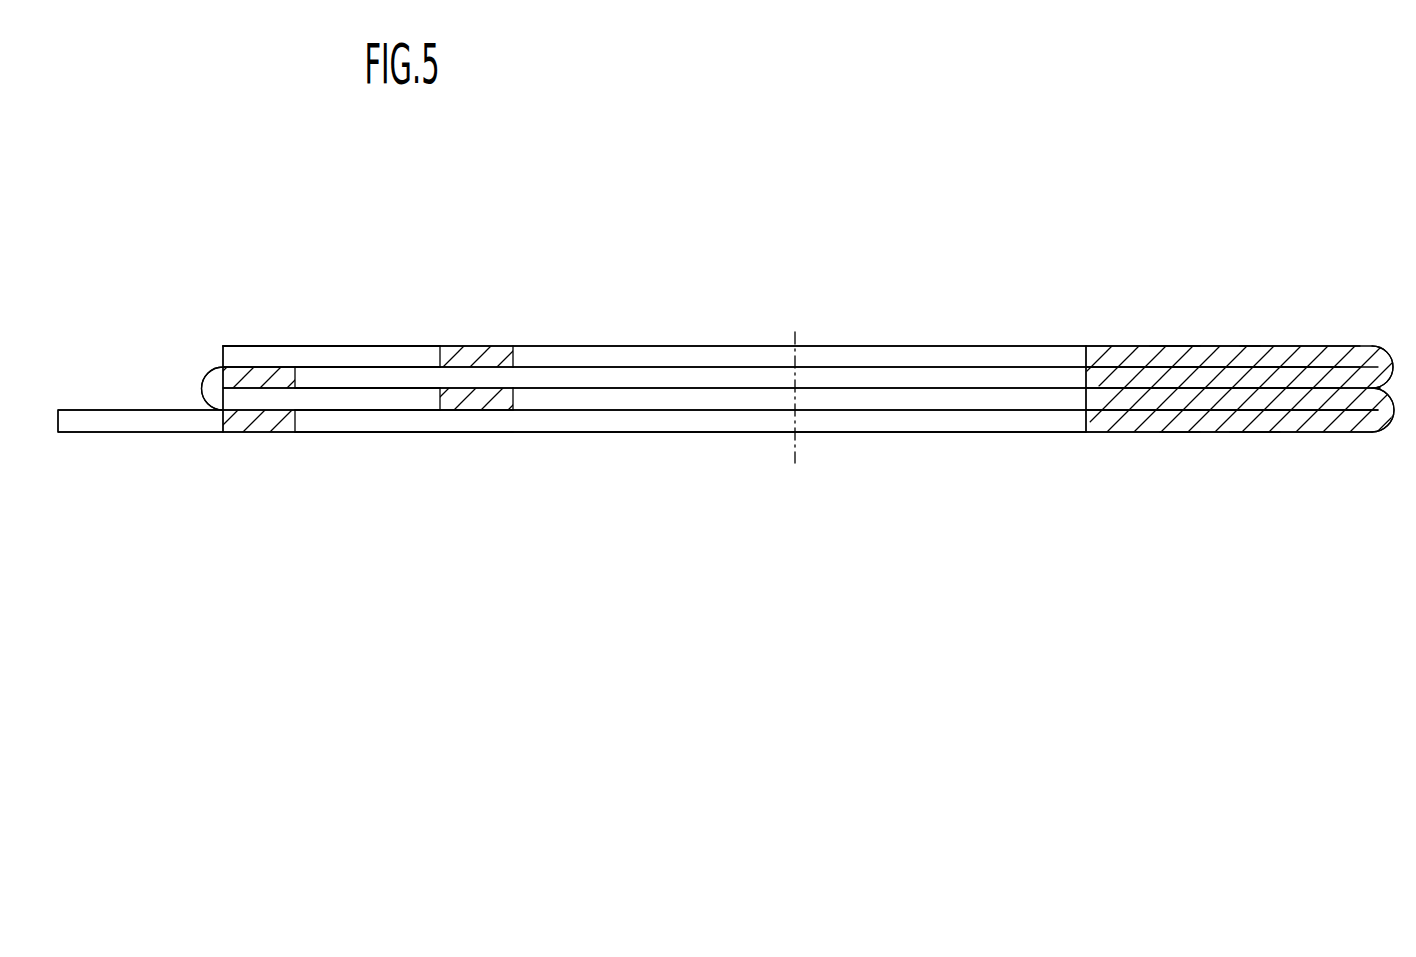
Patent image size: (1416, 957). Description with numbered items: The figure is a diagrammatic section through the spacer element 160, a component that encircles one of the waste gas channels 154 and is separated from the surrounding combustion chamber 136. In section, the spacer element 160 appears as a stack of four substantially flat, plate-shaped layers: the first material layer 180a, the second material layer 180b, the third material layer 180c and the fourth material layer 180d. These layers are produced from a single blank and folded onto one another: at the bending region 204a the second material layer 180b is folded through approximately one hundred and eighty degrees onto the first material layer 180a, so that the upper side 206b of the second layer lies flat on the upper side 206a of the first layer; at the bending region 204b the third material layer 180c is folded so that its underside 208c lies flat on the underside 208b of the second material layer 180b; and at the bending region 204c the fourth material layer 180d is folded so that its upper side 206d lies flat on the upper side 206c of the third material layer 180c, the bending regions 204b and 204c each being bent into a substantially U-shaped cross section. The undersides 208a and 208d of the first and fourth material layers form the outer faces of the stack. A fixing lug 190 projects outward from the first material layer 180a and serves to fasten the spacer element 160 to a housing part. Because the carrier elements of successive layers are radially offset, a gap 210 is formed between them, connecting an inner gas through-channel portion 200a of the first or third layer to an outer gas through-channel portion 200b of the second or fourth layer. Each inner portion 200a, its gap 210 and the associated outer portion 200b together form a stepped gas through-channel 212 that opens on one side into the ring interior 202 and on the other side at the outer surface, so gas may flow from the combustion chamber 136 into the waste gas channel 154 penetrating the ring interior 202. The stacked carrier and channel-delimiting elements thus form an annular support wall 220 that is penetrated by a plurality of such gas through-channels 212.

The combustion chamber 136 is at (83, 389).
The waste gas channel 154 is at (843, 376).
The spacer element 160 is at (603, 345).
The first material layer 180a is at (1282, 420).
The second material layer 180b is at (1318, 398).
The third material layer 180c is at (1287, 383).
The fourth material layer 180d is at (1300, 364).
The fixing lug 190 is at (110, 422).
The inner gas through-channel portion 200a is at (402, 375).
The outer gas through-channel portion 200b is at (320, 398).
The ring interior 202 is at (738, 420).
The bending region 204a is at (1397, 425).
The bending region 204b is at (208, 379).
The bending region 204c is at (1400, 350).
The upper side of the first material layer 206a is at (1108, 420).
The upper side of the second material layer 206b is at (1220, 420).
The upper side of the third material layer 206c is at (1180, 368).
The upper side of the fourth material layer 206d is at (1114, 365).
The underside of the first material layer 208a is at (1146, 420).
The underside of the second material layer 208b is at (1257, 392).
The underside of the third material layer 208c is at (1214, 392).
The underside of the fourth material layer 208d is at (1134, 368).
The gap 210 is at (420, 346).
The gas through-channel 212 is at (356, 346).
The annular support wall 220 is at (485, 348).